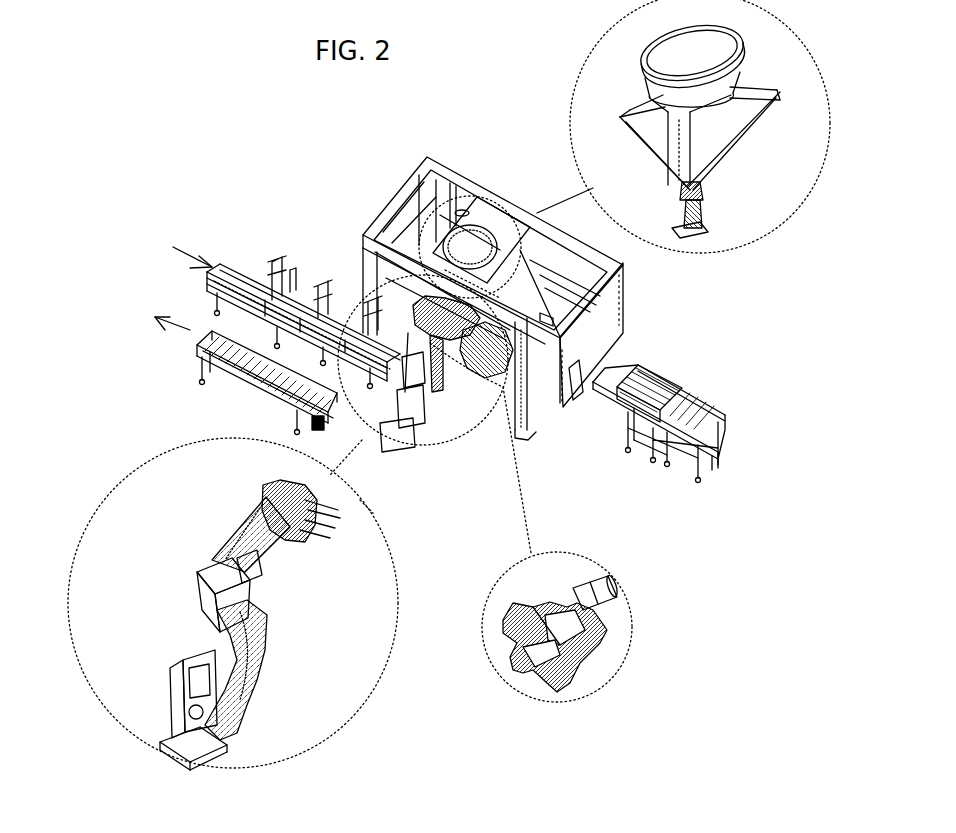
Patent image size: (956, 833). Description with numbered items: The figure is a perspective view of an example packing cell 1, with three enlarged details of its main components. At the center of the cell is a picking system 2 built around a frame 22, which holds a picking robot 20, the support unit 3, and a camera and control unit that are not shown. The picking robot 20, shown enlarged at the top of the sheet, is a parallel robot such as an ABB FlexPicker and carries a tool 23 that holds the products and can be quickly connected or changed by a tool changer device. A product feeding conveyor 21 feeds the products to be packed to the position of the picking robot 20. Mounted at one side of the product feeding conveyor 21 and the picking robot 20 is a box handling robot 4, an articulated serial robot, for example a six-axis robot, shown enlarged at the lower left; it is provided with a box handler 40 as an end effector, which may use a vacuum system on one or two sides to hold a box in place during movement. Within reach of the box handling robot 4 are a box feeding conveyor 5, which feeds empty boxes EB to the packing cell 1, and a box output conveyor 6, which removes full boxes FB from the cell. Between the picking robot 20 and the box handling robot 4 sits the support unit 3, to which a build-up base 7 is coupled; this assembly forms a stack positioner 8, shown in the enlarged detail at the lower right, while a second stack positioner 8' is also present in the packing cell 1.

The packing cell 1 is at (268, 170).
The picking system 2 is at (523, 275).
The support unit 3 is at (607, 627).
The box handling robot 4 is at (268, 678).
The box feeding conveyor 5 is at (251, 290).
The box output conveyor 6 is at (265, 384).
The build-up base 7 is at (540, 643).
The stack positioner 8 is at (565, 617).
The second stack positioner 8' is at (422, 389).
The picking robot 20 is at (622, 93).
The product feeding conveyor 21 is at (637, 364).
The frame 22 is at (397, 207).
The tool 23 is at (703, 223).
The box handler 40 is at (323, 523).
The empty boxes EB is at (176, 248).
The full boxes FB is at (154, 313).